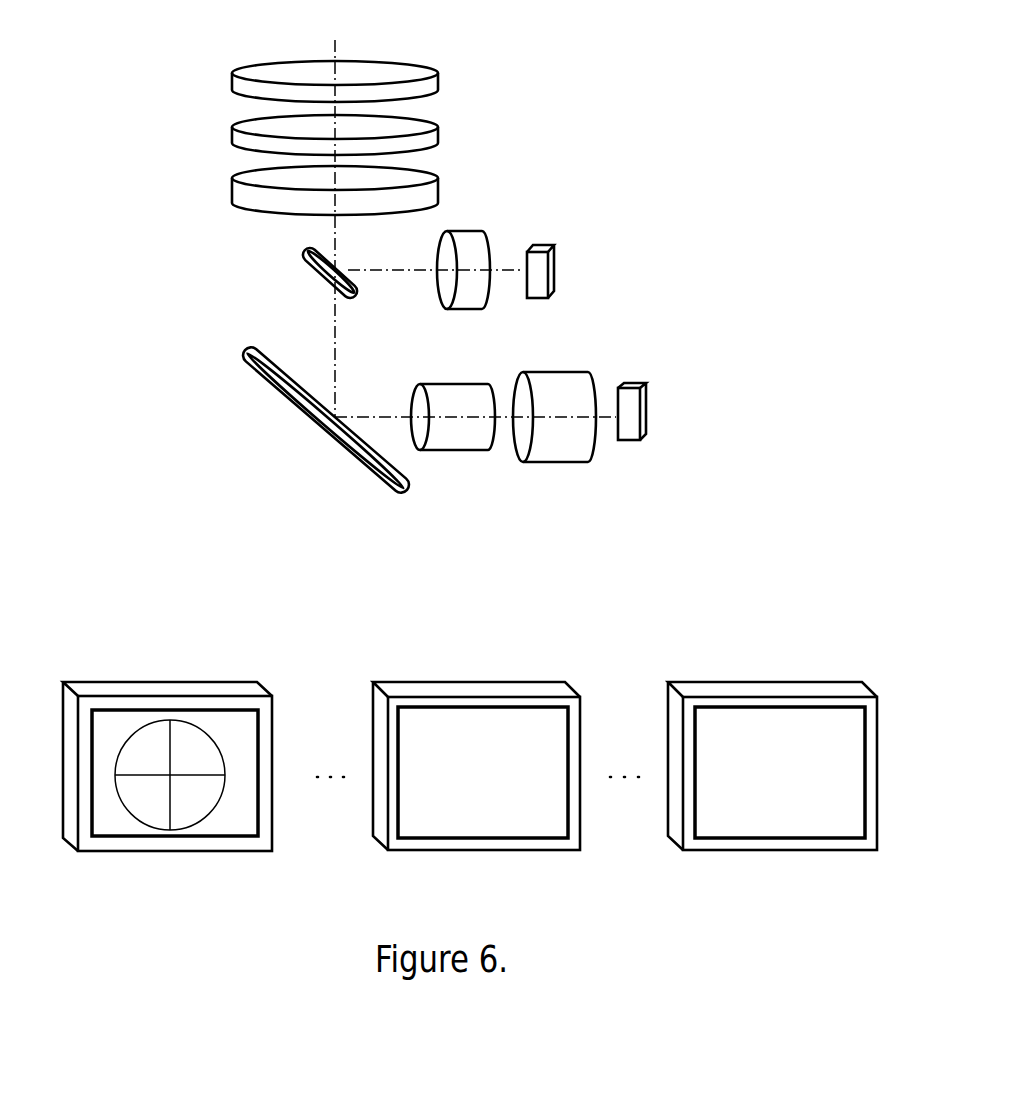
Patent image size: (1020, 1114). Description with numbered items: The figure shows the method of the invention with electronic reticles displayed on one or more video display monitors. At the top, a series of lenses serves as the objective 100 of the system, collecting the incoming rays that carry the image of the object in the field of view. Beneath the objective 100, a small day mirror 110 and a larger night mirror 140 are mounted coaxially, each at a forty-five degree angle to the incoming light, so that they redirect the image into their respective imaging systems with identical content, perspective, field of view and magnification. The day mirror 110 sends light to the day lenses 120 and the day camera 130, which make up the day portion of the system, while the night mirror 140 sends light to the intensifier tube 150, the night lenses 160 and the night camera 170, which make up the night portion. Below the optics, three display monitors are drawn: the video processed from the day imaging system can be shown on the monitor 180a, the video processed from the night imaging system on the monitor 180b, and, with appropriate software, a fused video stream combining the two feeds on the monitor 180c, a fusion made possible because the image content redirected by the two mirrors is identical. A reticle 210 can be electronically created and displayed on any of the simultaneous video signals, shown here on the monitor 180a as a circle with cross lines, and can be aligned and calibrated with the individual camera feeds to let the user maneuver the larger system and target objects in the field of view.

The objective 100 is at (450, 53).
The day mirror 110 is at (324, 286).
The day lenses 120 is at (466, 230).
The day camera 130 is at (559, 271).
The night mirror 140 is at (314, 446).
The intensifier tube 150 is at (451, 457).
The night lenses 160 is at (556, 470).
The night camera 170 is at (635, 387).
The monitor 180a is at (115, 680).
The monitor 180b is at (414, 679).
The monitor 180c is at (710, 679).
The reticle 210 is at (231, 776).